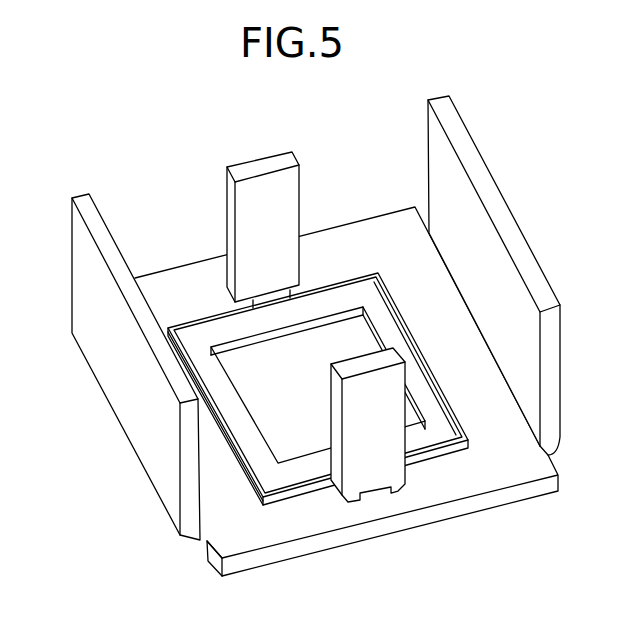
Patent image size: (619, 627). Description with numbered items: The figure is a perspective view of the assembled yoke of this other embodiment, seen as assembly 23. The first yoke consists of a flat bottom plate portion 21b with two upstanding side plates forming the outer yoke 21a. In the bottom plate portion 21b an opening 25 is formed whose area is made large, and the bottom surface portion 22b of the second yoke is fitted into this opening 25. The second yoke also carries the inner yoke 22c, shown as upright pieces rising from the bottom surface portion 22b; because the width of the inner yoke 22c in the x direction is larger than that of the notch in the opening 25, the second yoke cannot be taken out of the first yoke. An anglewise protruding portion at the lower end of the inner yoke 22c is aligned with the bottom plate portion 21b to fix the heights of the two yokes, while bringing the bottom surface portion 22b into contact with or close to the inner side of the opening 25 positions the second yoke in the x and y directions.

The outer yoke 21a is at (121, 393).
The bottom plate portion 21b is at (481, 478).
The bottom surface portion 22b is at (216, 328).
The inner yoke 22c is at (268, 193).
The holder 23 is at (300, 347).
The opening 25 is at (303, 433).